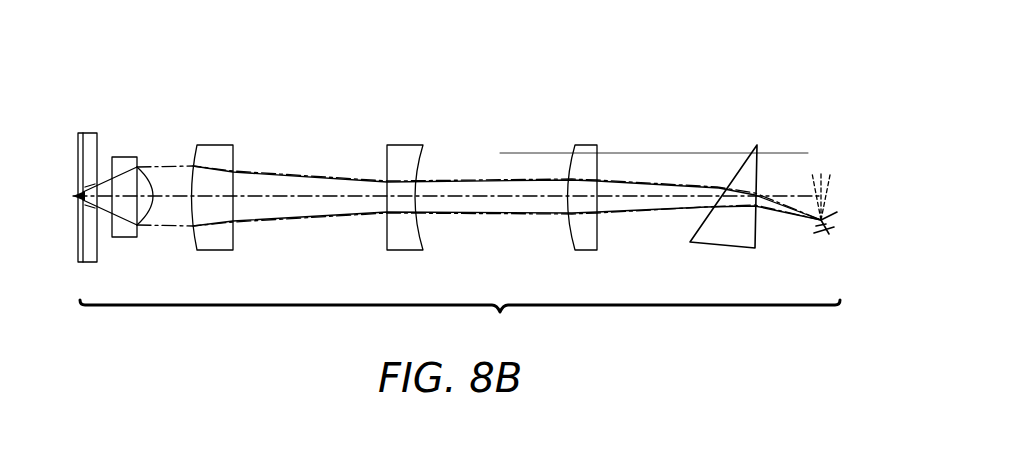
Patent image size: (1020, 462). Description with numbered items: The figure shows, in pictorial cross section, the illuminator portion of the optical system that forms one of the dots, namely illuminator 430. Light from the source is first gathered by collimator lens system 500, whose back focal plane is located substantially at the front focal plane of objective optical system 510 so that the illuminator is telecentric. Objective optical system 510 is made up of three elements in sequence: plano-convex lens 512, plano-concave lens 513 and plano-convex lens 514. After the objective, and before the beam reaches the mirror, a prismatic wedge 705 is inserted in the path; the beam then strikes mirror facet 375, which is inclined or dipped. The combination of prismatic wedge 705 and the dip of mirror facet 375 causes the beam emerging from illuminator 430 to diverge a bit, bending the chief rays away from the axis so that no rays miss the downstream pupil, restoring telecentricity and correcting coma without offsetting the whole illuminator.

The collimator lens system 500 is at (193, 119).
The objective optical system 510 is at (595, 119).
The plano-convex lens 512 is at (217, 250).
The plano-concave lens 513 is at (407, 250).
The plano-convex lens 514 is at (587, 250).
The prismatic wedge 705 is at (722, 248).
The mirror facet 375 is at (821, 220).
The illuminator 430 is at (460, 321).